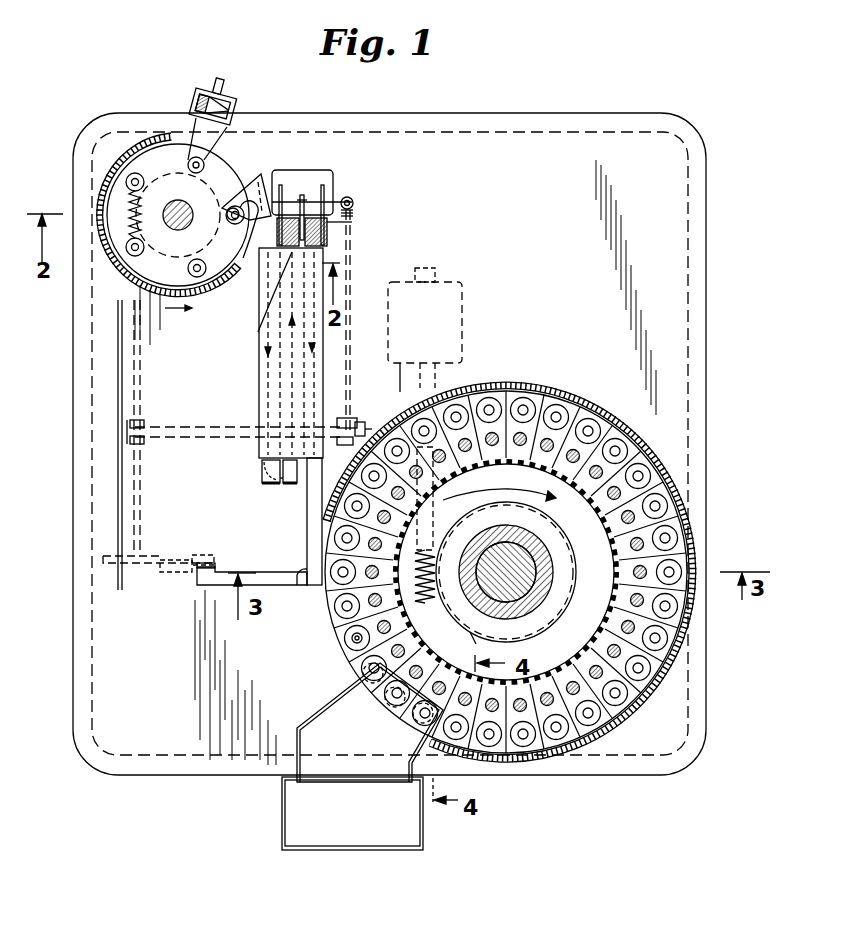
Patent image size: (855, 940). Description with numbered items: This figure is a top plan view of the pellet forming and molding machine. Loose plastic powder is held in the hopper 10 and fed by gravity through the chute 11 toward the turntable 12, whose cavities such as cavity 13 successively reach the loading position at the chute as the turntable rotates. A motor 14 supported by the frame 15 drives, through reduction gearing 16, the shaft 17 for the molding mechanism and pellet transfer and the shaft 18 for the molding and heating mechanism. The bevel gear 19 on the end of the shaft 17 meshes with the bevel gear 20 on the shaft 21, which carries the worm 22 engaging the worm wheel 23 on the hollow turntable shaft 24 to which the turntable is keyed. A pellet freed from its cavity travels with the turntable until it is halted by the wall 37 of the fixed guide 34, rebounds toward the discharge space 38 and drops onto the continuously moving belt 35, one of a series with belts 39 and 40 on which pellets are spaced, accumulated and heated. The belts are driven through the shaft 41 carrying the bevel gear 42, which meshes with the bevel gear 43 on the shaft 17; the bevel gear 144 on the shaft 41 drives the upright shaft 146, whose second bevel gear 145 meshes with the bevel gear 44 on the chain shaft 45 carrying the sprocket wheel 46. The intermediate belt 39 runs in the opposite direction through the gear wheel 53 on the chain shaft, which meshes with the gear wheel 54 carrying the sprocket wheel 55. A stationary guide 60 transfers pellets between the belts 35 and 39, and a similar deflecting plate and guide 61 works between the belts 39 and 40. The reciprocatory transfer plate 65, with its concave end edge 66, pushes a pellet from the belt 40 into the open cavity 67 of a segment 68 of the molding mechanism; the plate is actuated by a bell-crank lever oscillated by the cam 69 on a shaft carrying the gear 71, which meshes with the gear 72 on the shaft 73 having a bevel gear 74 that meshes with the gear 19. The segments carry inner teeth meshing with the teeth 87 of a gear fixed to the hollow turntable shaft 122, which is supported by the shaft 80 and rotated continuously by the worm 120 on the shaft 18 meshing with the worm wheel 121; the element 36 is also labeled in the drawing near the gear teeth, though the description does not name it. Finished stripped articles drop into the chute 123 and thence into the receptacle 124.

The hopper 10 is at (238, 102).
The chute 11 is at (215, 140).
The turntable 12 is at (247, 275).
The cavity 13 is at (203, 278).
The motor 14 is at (463, 332).
The frame 15 is at (690, 410).
The reduction gearing 16 is at (455, 390).
The shaft 17 is at (215, 428).
The shaft 18 is at (430, 507).
The bevel gear 19 is at (128, 436).
The bevel gear 20 is at (148, 422).
The shaft 21 is at (145, 365).
The worm 22 is at (125, 245).
The worm wheel 23 is at (150, 182).
The hollow turntable shaft 24 is at (188, 199).
The guide 34 is at (262, 175).
The belt 35 is at (262, 475).
The gear teeth 36 is at (517, 470).
The wall 37 is at (227, 216).
The discharge space 38 is at (248, 236).
The belt 39 is at (288, 485).
The belt 40 is at (306, 547).
The shaft 41 is at (352, 262).
The bevel gear 42 is at (362, 420).
The bevel gear 43 is at (345, 446).
The bevel gear 44 is at (348, 196).
The chain shaft 45 is at (317, 214).
The sprocket wheel 46 is at (353, 222).
The gear wheel 53 is at (300, 218).
The gear wheel 54 is at (307, 203).
The sprocket wheel 55 is at (302, 198).
The stationary guide 60 is at (280, 484).
The deflecting plate and guide 61 is at (262, 318).
The reciprocatory transfer plate 65 is at (222, 586).
The concave end edge 66 is at (296, 590).
The open cavity 67 is at (338, 580).
The segment 68 is at (358, 654).
The cam 69 is at (205, 577).
The gear 71 is at (197, 560).
The gear 72 is at (160, 560).
The shaft 73 is at (142, 505).
The bevel gear 74 is at (150, 442).
The shaft 80 is at (518, 552).
The teeth 87 is at (516, 495).
The worm 120 is at (425, 605).
The worm wheel 121 is at (465, 640).
The hollow turntable shaft 122 is at (505, 622).
The chute 123 is at (330, 718).
The receptacle 124 is at (282, 830).
The bevel gear 144 is at (354, 208).
The bevel gear 145 is at (354, 203).
The upright shaft 146 is at (352, 200).